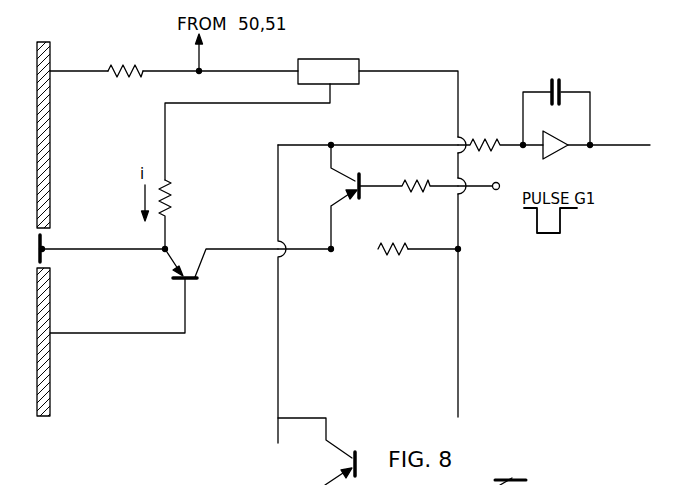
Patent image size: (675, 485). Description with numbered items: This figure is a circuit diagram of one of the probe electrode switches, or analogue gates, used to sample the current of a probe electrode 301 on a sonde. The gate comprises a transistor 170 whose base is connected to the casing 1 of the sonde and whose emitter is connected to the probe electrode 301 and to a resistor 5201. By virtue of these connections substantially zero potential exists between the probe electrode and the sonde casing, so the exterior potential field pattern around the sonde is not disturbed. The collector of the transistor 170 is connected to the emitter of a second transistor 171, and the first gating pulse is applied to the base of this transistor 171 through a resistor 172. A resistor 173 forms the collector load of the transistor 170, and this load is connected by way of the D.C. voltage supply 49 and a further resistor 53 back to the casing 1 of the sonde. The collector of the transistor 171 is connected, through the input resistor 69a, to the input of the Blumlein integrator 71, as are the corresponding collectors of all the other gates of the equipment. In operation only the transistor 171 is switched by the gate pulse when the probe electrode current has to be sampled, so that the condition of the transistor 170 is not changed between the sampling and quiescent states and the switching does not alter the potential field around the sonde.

The casing 1 is at (50, 157).
The resistor 53 is at (116, 60).
The D.C. voltage supply 49 is at (345, 70).
The resistor 5201 is at (176, 190).
The probe electrode 301 is at (44, 242).
The transistor 170 is at (196, 281).
The transistor 171 is at (366, 180).
The resistor 172 is at (405, 196).
The resistor 173 is at (390, 253).
The resistor 69a is at (483, 138).
The integrator 71 is at (556, 112).